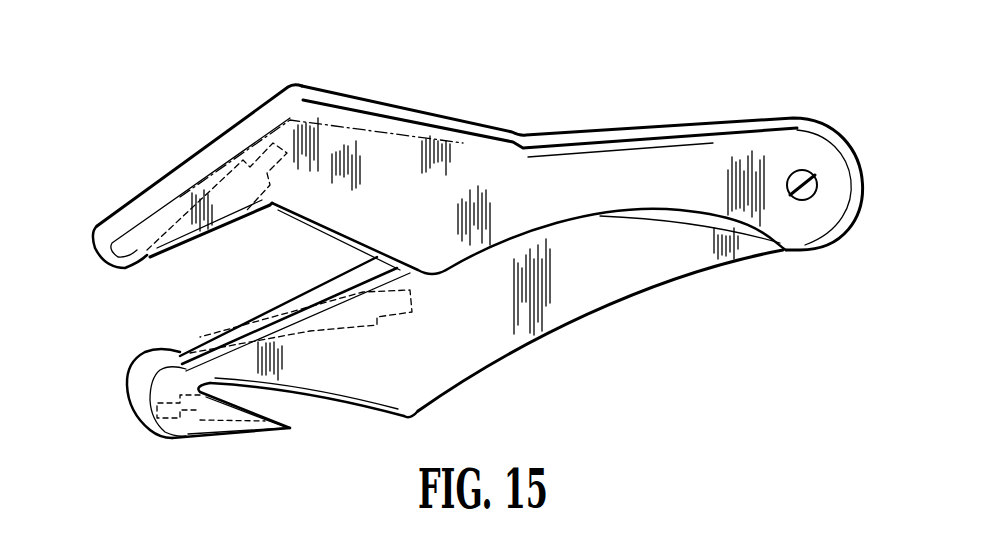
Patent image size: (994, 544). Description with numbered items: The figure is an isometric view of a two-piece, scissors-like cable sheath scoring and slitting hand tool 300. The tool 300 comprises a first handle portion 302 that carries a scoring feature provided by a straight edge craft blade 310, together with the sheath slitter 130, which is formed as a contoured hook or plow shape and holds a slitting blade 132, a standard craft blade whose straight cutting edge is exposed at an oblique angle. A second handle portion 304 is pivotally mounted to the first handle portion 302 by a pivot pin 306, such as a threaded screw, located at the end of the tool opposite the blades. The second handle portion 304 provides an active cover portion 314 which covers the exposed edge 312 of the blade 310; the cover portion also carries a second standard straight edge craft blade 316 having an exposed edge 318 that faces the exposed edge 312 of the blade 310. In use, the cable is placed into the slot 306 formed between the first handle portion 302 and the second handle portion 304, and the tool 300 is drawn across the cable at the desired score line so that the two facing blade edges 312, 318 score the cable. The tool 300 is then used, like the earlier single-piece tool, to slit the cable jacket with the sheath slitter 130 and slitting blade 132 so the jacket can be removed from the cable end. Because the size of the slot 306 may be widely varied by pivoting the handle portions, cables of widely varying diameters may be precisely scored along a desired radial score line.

The two-piece tool 300 is at (657, 92).
The first handle portion 302 is at (573, 300).
The second handle portion 304 is at (480, 167).
The pivot pin 306 is at (800, 177).
The straight edge craft blade 310 is at (342, 314).
The exposed edge 312 is at (243, 316).
The active cover portion 314 is at (233, 110).
The second standard straight edge craft blade 316 is at (225, 200).
The exposed edge 318 is at (188, 254).
The sheath slitter 130 is at (246, 446).
The slitting blade 132 is at (190, 413).